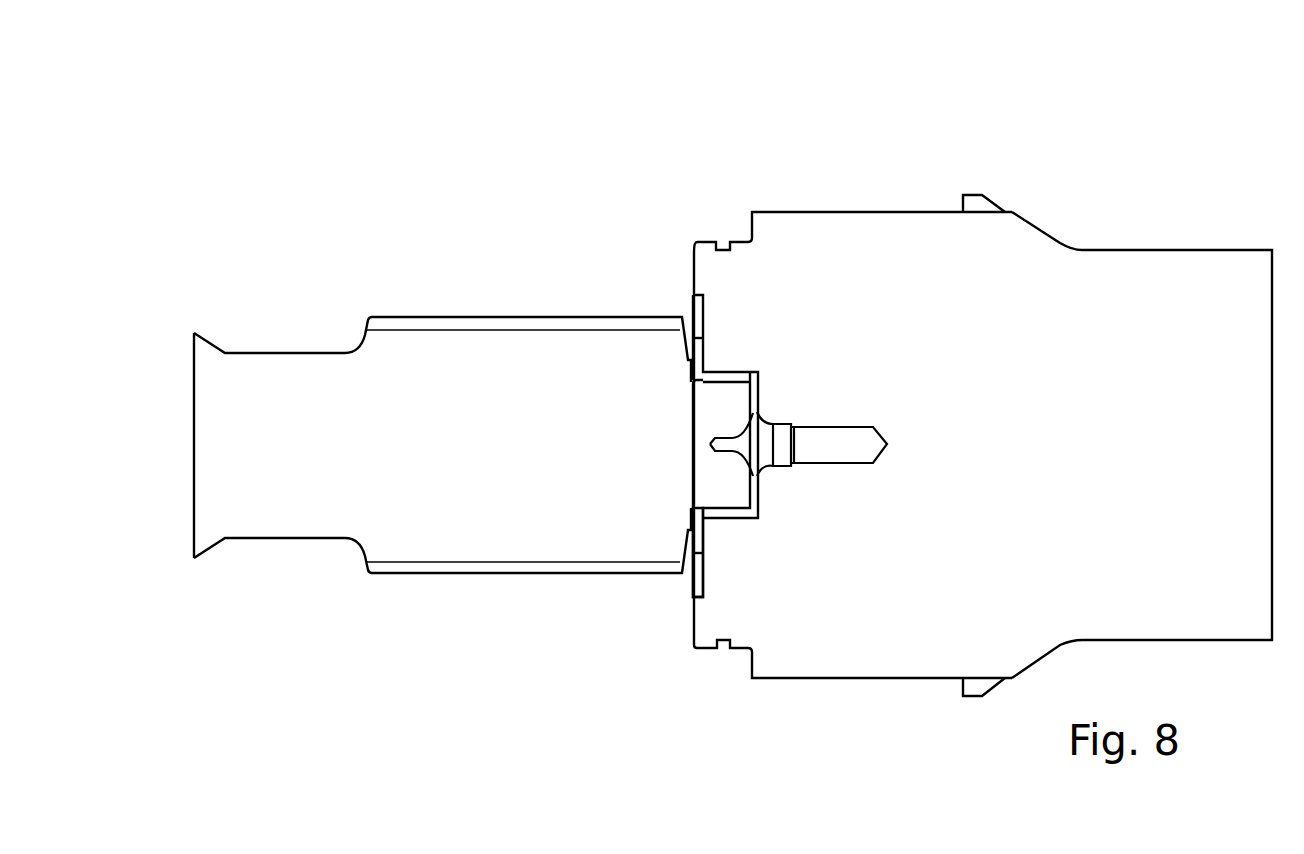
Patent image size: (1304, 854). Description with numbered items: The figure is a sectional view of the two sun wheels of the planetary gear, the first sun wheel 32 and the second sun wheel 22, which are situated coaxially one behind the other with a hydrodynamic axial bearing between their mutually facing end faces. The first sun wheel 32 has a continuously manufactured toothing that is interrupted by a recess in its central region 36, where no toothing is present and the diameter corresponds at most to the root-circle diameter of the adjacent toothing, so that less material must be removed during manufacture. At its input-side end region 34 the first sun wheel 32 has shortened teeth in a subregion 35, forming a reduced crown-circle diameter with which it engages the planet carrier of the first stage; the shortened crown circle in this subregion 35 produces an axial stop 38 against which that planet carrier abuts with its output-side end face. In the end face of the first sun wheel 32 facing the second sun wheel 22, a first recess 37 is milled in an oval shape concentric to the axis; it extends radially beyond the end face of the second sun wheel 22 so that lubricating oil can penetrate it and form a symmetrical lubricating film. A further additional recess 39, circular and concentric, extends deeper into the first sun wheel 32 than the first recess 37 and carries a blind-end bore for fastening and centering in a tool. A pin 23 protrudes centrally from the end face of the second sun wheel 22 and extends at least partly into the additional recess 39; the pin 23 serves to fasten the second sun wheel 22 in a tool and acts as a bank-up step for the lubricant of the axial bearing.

The second sun wheel 22 is at (430, 388).
The pin 23 is at (713, 482).
The first sun wheel 32 is at (1020, 253).
The input-side end region 34 is at (983, 352).
The subregion 35 is at (853, 260).
The central region 36 is at (1157, 250).
The first recess 37 is at (698, 318).
The axial stop 38 is at (960, 200).
The additional recess 39 is at (738, 515).